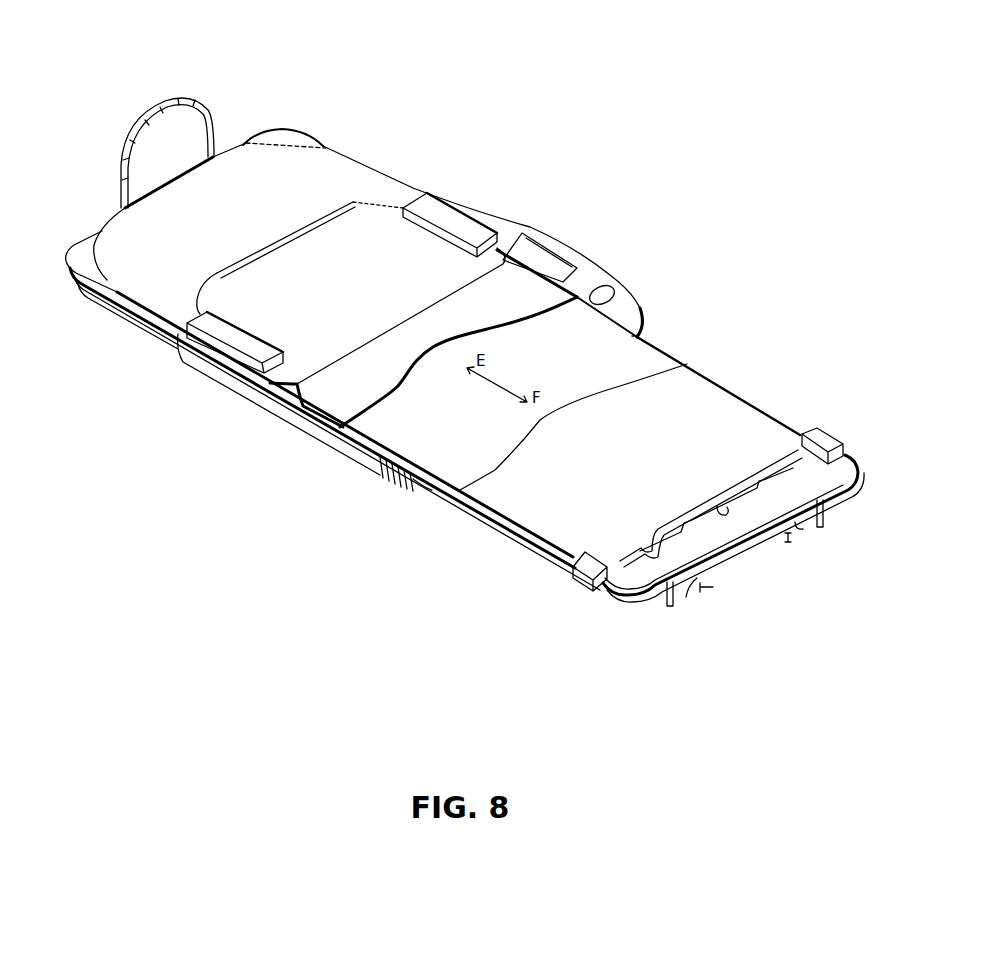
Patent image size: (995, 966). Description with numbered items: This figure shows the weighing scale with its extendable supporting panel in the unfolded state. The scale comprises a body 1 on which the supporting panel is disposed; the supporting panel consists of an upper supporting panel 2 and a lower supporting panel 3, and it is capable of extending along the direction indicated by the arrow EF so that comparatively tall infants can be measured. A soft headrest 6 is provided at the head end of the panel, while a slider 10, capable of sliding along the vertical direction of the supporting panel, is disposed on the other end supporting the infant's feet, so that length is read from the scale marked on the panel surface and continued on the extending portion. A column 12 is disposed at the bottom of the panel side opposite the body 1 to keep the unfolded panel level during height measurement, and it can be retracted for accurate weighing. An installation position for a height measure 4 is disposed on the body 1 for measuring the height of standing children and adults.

The body 1 is at (233, 391).
The upper supporting panel 2 is at (650, 427).
The lower supporting panel 3 is at (72, 238).
The height measure installation position 4 is at (604, 288).
The soft headrest 6 is at (225, 207).
The slider 10 is at (785, 460).
The column 12 is at (822, 528).